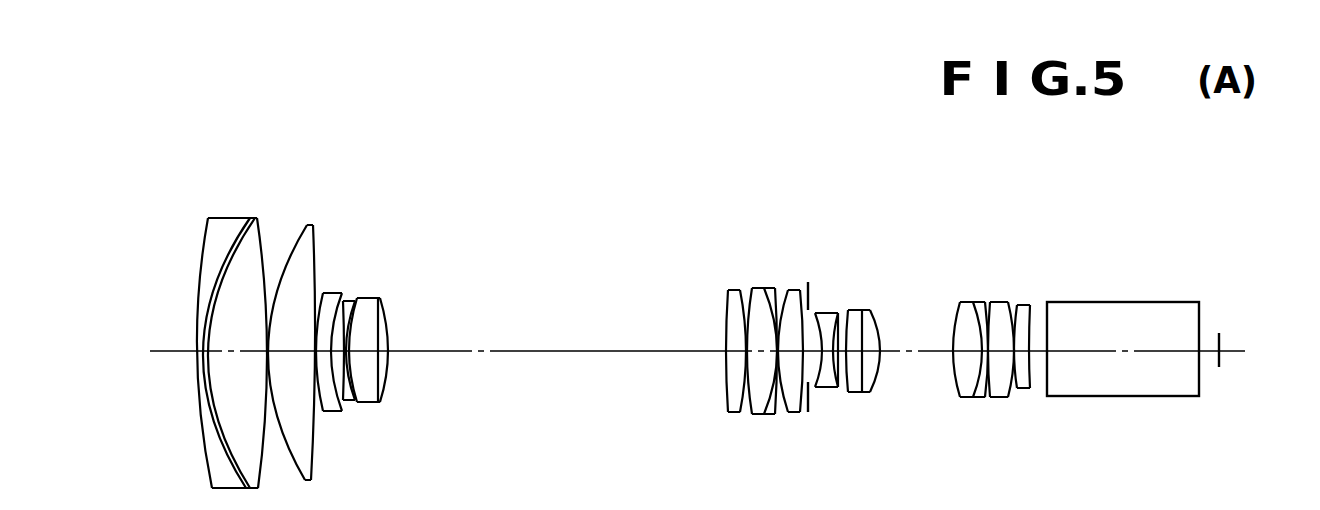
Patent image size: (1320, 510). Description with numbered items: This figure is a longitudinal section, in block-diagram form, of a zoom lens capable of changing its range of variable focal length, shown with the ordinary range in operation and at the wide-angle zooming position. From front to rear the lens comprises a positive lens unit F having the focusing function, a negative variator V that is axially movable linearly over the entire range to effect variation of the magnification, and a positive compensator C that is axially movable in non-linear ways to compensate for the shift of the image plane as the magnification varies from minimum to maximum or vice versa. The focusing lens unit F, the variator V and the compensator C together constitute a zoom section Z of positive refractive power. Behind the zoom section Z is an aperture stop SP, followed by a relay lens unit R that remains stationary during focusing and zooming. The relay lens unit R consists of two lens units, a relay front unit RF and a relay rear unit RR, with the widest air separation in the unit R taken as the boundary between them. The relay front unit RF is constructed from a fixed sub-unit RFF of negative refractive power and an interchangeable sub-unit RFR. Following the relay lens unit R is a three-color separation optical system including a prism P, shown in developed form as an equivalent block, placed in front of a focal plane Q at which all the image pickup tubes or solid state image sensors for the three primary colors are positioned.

The zoom section Z is at (183, 147).
The positive lens unit F is at (338, 200).
The negative variator V is at (405, 280).
The positive compensator C is at (713, 276).
The aperture stop SP is at (809, 398).
The relay lens unit R is at (792, 145).
The relay front unit RF is at (902, 193).
The fixed sub-unit RFF is at (838, 297).
The interchangeable sub-unit RFR is at (843, 297).
The relay rear unit RR is at (1038, 293).
The prism P is at (1172, 302).
The focal plane Q is at (1220, 333).